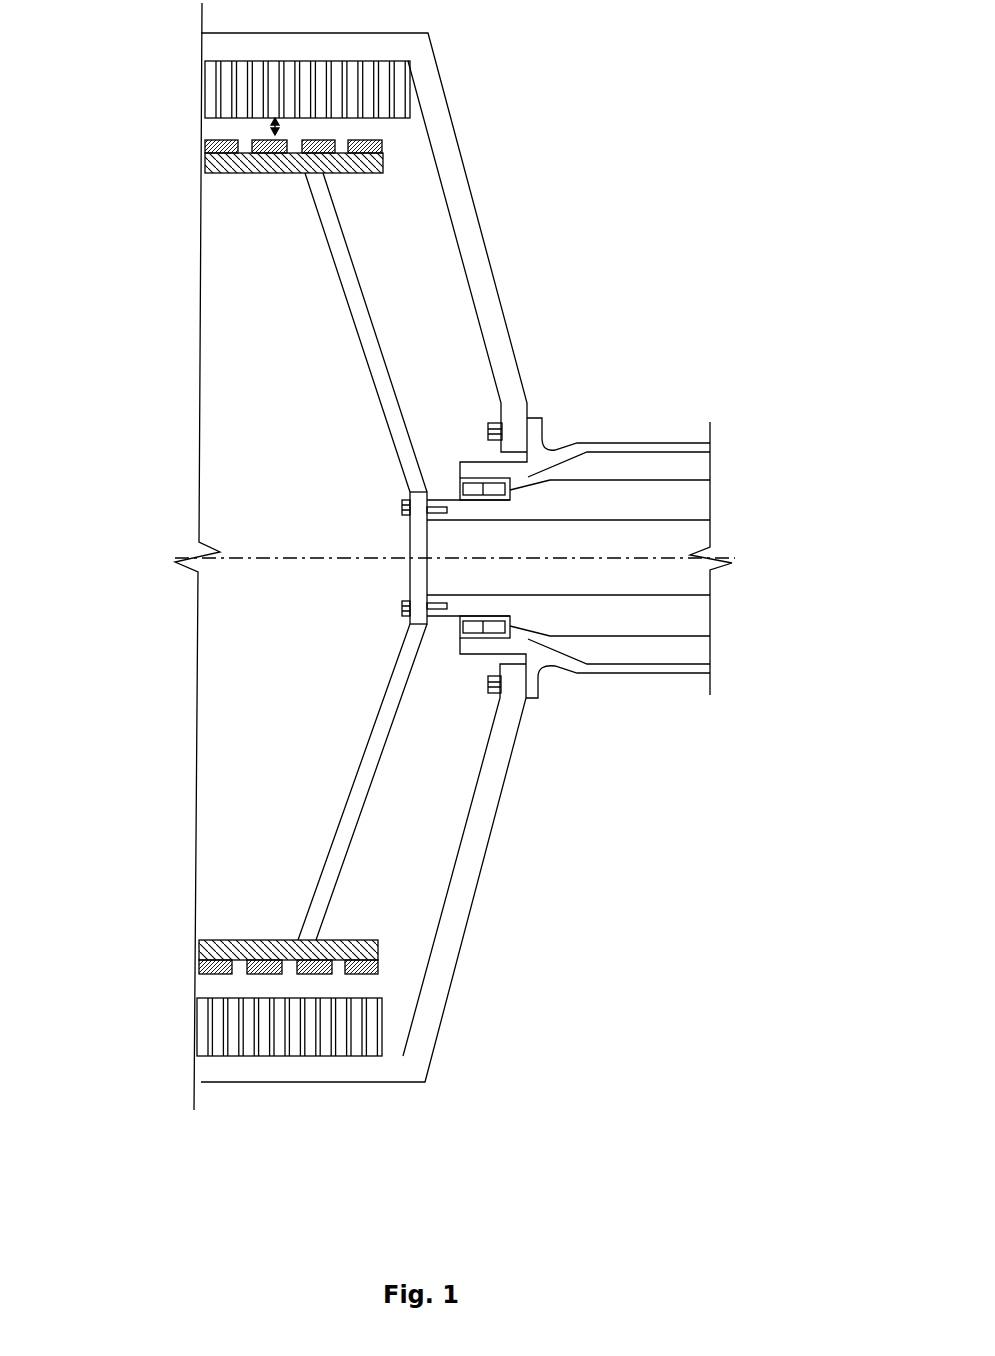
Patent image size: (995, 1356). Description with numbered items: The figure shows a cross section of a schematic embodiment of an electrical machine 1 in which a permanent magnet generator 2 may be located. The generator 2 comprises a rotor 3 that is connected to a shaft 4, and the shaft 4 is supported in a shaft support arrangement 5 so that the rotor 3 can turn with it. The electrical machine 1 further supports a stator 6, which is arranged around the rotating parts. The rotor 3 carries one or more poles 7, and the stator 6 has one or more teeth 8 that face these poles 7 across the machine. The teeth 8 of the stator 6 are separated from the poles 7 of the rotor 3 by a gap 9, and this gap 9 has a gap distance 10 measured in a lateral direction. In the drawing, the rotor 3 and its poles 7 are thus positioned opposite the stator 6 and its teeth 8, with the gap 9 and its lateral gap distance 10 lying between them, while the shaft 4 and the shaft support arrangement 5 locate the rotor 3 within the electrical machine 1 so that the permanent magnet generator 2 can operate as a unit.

The electrical machine 1 is at (612, 1023).
The PM generator 2 is at (528, 263).
The rotor 3 is at (216, 944).
The shaft 4 is at (628, 567).
The shaft support arrangement 5 is at (455, 683).
The stator 6 is at (234, 1036).
The poles 7 is at (203, 144).
The teeth 8 is at (217, 87).
The gap 9 is at (395, 126).
The gap distance 10 is at (283, 126).